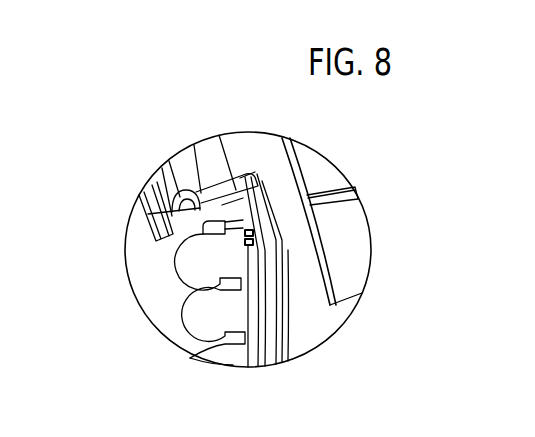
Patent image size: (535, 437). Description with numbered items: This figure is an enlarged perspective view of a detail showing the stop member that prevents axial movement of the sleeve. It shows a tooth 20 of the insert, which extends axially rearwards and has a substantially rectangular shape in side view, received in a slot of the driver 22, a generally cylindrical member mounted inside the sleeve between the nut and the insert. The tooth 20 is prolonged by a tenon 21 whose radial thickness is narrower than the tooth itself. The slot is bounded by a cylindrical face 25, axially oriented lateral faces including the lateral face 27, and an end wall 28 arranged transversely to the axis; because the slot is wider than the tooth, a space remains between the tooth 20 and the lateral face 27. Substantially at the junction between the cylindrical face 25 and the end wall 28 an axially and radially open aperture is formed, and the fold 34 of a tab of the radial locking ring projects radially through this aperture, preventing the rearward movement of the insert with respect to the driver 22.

The tooth 20 is at (153, 272).
The tenon 21 is at (243, 357).
The driver 22 is at (290, 200).
The cylindrical face 25 is at (200, 219).
The lateral face 27 is at (193, 190).
The end wall 28 is at (245, 178).
The fold 34 is at (252, 232).